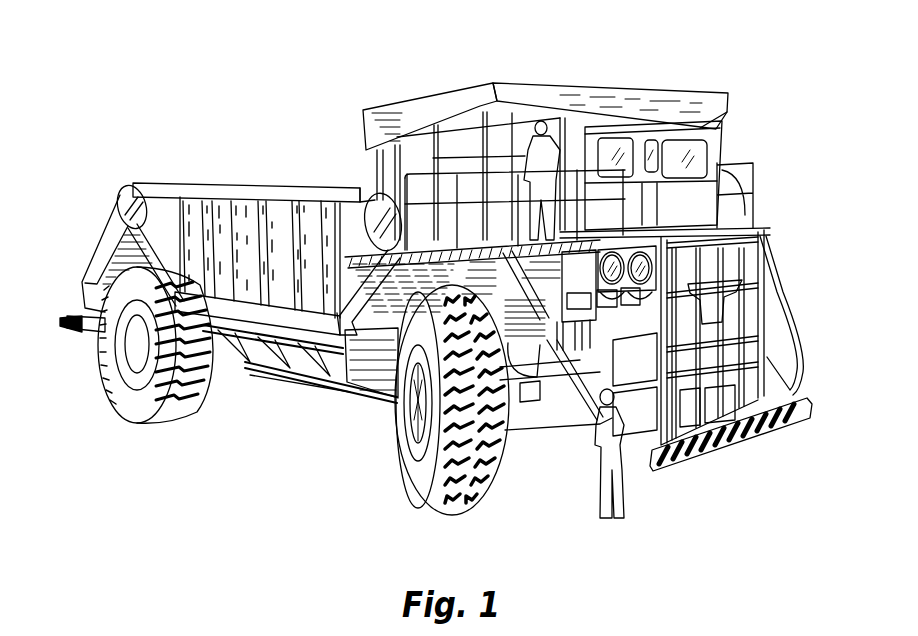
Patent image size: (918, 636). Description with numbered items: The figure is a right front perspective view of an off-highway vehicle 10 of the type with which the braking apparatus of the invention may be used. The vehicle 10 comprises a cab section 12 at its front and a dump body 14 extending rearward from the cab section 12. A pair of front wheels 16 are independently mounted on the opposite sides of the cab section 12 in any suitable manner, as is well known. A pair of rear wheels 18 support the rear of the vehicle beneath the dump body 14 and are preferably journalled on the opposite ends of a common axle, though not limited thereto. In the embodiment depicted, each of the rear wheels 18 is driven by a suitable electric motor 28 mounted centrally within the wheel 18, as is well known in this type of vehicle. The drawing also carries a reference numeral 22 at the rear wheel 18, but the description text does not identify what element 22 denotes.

The off-highway vehicle 10 is at (367, 93).
The cab section 12 is at (679, 105).
The dump body 14 is at (265, 205).
The front wheels 16 is at (505, 478).
The rear wheels 18 is at (144, 398).
The tire 22 is at (106, 352).
The electric motor 28 is at (134, 364).